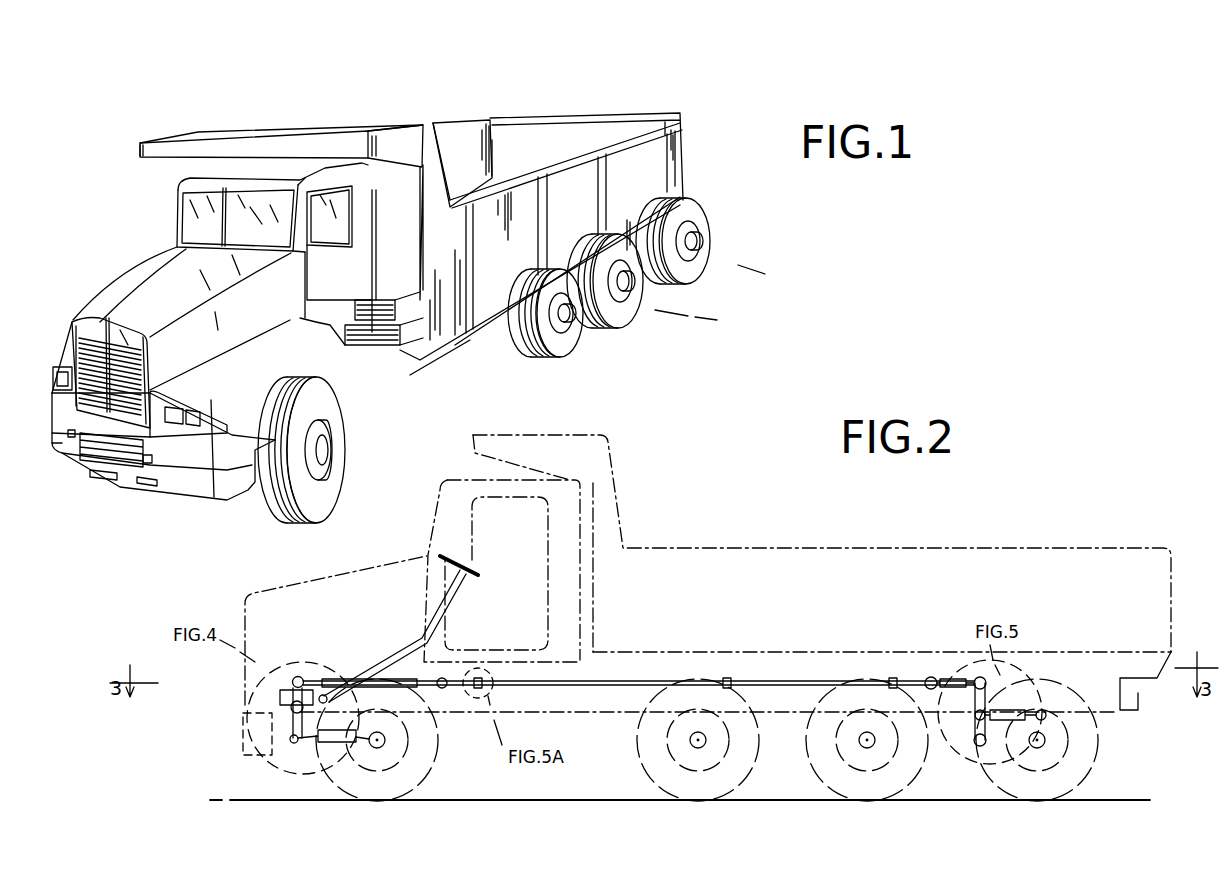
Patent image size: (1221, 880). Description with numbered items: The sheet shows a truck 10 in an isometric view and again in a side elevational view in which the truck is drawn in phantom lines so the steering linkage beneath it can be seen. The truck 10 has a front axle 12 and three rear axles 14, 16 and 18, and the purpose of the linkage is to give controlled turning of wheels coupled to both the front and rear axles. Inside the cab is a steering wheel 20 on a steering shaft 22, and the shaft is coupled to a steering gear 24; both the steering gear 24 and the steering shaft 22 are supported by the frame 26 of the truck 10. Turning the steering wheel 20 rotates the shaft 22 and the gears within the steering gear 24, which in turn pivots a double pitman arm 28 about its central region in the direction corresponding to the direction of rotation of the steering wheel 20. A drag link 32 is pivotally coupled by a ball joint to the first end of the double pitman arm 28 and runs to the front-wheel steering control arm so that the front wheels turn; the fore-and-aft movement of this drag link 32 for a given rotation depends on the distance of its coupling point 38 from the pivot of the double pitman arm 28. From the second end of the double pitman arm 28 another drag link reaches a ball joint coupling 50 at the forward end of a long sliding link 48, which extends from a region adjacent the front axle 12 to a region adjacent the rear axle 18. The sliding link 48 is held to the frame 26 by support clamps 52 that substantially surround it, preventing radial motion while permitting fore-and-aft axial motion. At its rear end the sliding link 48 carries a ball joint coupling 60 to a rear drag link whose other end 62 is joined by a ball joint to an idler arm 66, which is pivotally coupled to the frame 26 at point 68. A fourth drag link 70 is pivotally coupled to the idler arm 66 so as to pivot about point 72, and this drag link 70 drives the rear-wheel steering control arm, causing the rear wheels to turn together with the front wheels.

In FIG. 1, the truck 10 is at (213, 91).
In FIG. 2, the truck 10 is at (731, 511).
In FIG. 1, the front axle 12 is at (320, 452).
In FIG. 1, the rear axle 14 is at (570, 318).
In FIG. 1, the rear axle 16 is at (628, 284).
In FIG. 1, the rear axle 18 is at (693, 243).
In FIG. 2, the steering wheel 20 is at (480, 573).
In FIG. 2, the steering shaft 22 is at (390, 652).
In FIG. 2, the steering gear 24 is at (280, 698).
In FIG. 1, the frame 26 is at (465, 327).
In FIG. 2, the double pitman arm 28 is at (297, 676).
In FIG. 2, the drag link 32 is at (338, 745).
In FIG. 2, the coupling point 38 is at (290, 745).
In FIG. 2, the sliding link 48 is at (622, 683).
In FIG. 2, the ball joint coupling 50 is at (446, 678).
In FIG. 2, the support clamp 52 is at (482, 678).
In FIG. 2, the ball joint coupling 60 is at (934, 677).
In FIG. 2, the other end of drag link 62 is at (988, 683).
In FIG. 2, the idler arm 66 is at (1000, 734).
In FIG. 2, the pivot point 68 is at (986, 747).
In FIG. 2, the fourth drag link 70 is at (1042, 710).
In FIG. 2, the pivot point 72 is at (973, 735).